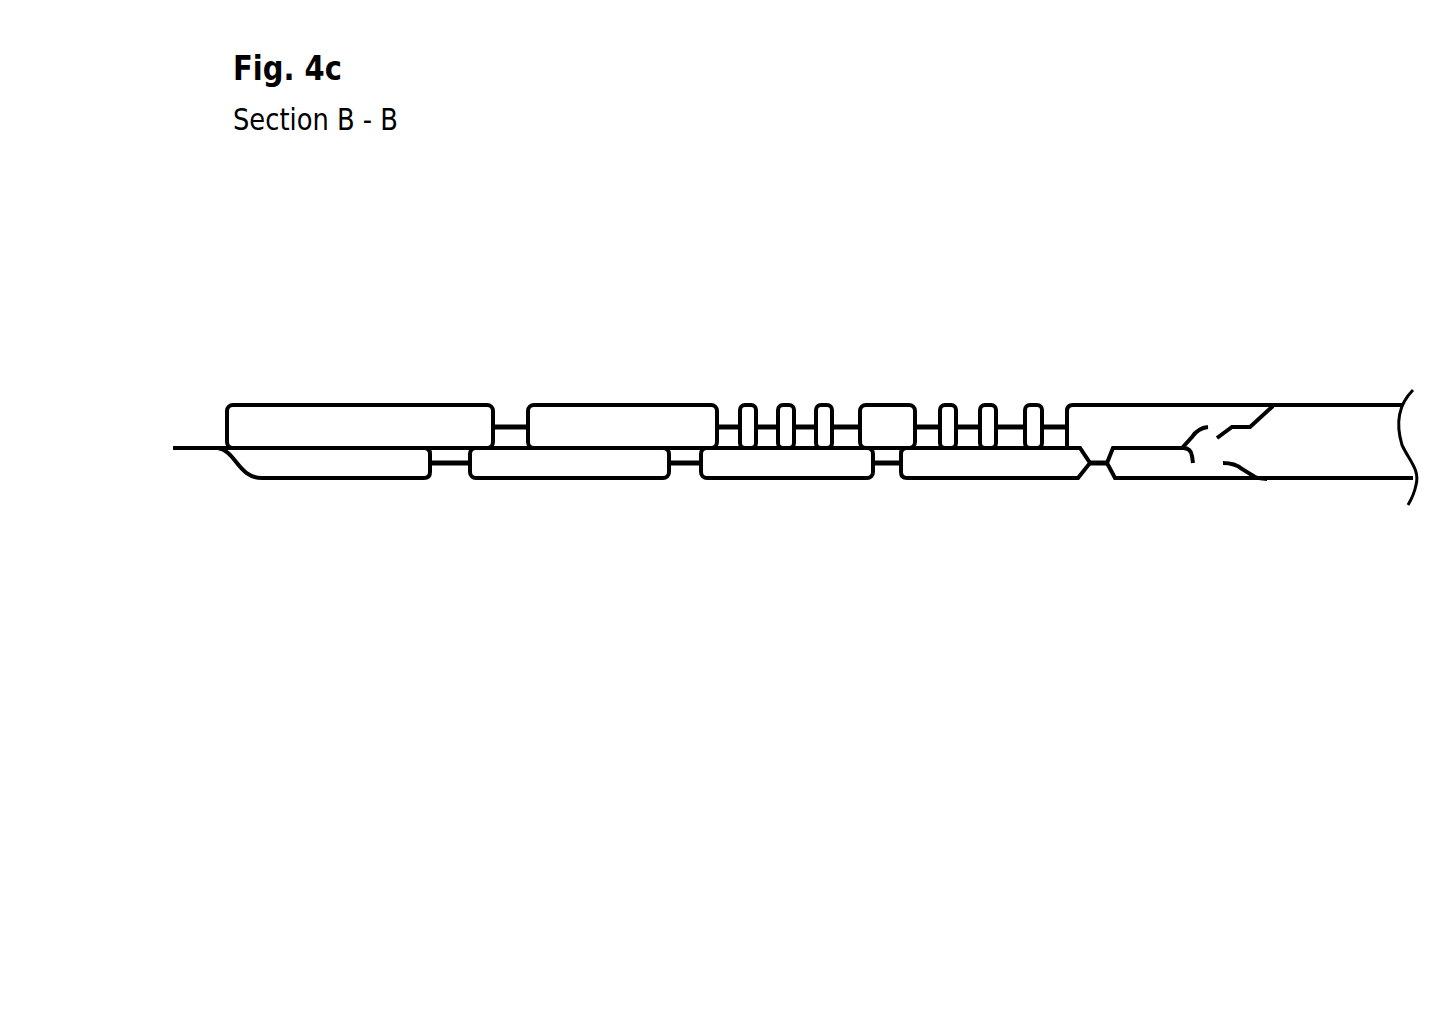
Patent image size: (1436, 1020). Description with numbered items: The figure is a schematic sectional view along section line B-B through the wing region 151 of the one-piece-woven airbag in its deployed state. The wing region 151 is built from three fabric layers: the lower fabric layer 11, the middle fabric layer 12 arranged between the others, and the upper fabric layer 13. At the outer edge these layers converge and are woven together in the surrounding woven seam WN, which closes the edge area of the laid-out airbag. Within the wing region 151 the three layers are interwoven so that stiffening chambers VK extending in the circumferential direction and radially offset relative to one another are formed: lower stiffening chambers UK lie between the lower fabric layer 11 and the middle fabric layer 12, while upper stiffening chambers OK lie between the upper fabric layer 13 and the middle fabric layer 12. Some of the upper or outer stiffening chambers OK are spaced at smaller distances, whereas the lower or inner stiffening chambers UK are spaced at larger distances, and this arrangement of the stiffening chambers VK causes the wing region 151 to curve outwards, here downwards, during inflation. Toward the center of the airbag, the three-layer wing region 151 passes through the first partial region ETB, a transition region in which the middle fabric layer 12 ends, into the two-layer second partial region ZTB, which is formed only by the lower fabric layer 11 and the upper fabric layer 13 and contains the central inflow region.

The wing region 151 is at (844, 199).
The woven seam WN is at (222, 447).
The upper stiffening chamber OK is at (378, 413).
The lower stiffening chamber UK is at (323, 463).
The lower fabric layer 11 is at (1365, 404).
The middle fabric layer 12 is at (1150, 447).
The upper fabric layer 13 is at (1362, 482).
The first partial region ETB is at (1272, 402).
The second partial region ZTB is at (1302, 487).
The stiffening chambers VK is at (780, 580).